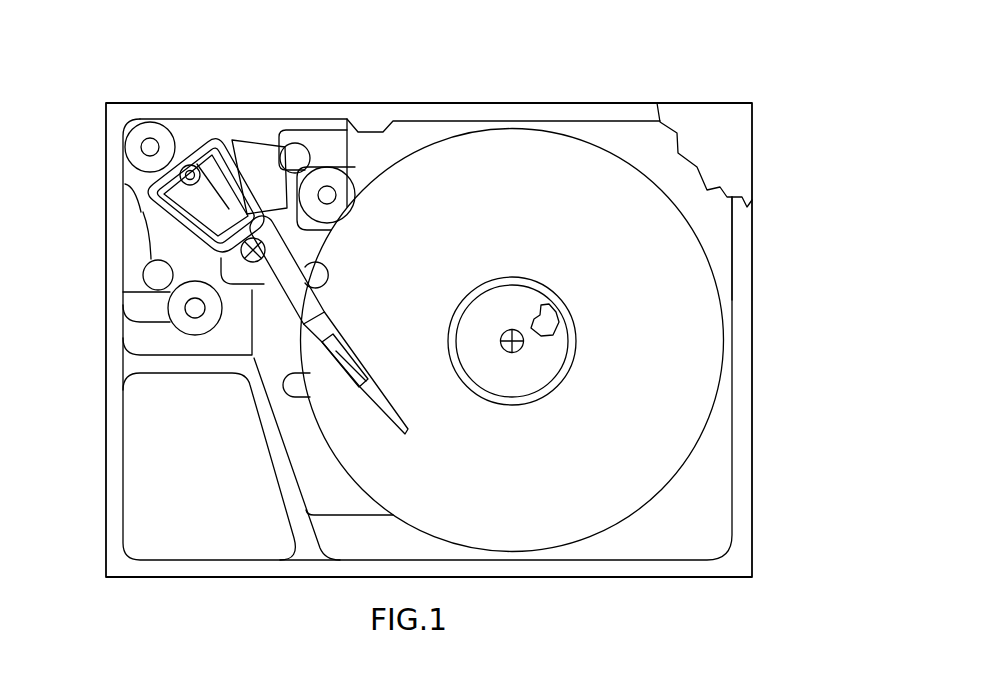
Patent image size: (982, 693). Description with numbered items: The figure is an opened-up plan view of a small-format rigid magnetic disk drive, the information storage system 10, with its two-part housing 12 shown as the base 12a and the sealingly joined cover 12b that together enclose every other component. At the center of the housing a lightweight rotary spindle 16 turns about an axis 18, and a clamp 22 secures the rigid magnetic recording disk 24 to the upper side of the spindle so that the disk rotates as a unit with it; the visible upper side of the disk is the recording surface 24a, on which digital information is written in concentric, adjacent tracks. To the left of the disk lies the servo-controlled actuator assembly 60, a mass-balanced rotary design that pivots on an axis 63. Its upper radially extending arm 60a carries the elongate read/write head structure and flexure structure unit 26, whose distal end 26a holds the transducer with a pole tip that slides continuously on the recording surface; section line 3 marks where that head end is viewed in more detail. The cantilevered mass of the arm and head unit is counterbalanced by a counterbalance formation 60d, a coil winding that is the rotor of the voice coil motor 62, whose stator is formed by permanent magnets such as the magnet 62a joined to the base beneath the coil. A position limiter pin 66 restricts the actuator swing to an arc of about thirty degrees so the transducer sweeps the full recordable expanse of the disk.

The information storage system 10 is at (792, 226).
The two-part housing 12 is at (754, 390).
The base 12a is at (742, 302).
The cover 12b is at (742, 167).
The rotary spindle 16 is at (545, 320).
The axis 18 is at (510, 348).
The clamp 22 is at (513, 298).
The rigid magnetic recording disk 24 is at (668, 488).
The recording surface 24a is at (621, 448).
The read/write head structure and elongate flexure structure unit 26 is at (379, 385).
The distal end 26a is at (414, 427).
The section line FIG. 3 is at (409, 417).
The actuator assembly 60 is at (250, 160).
The upper arm 60a is at (302, 303).
The counterbalance formation 60d is at (208, 137).
The voice coil motor 62 is at (161, 230).
The permanent magnet 62a is at (148, 224).
The pivot axis 63 is at (258, 262).
The position limiter pin 66 is at (196, 166).